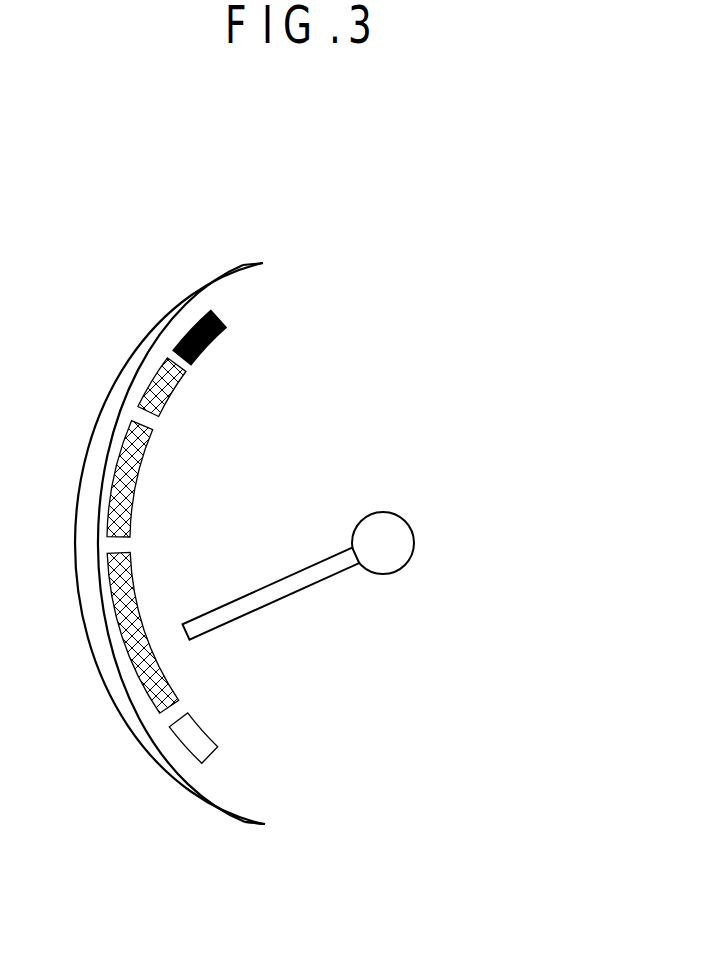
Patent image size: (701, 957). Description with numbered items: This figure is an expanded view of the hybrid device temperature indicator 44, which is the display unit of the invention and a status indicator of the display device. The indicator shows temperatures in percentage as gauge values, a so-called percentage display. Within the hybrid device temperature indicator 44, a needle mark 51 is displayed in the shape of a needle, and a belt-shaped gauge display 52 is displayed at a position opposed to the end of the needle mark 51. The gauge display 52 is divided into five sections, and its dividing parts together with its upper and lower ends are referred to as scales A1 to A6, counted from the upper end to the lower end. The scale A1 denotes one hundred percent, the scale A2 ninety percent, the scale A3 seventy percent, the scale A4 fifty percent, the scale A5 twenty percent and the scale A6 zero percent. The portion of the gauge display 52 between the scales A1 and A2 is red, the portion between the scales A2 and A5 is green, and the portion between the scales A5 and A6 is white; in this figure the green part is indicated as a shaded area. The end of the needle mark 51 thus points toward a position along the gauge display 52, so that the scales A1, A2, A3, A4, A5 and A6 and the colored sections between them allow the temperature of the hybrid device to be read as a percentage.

The hybrid device temperature indicator 44 is at (254, 494).
The needle mark 51 is at (274, 592).
The gauge display 52 is at (125, 485).
The scale A1 is at (228, 318).
The scale A2 is at (178, 357).
The scale A3 is at (137, 415).
The scale A4 is at (107, 548).
The scale A5 is at (168, 722).
The scale A6 is at (212, 760).